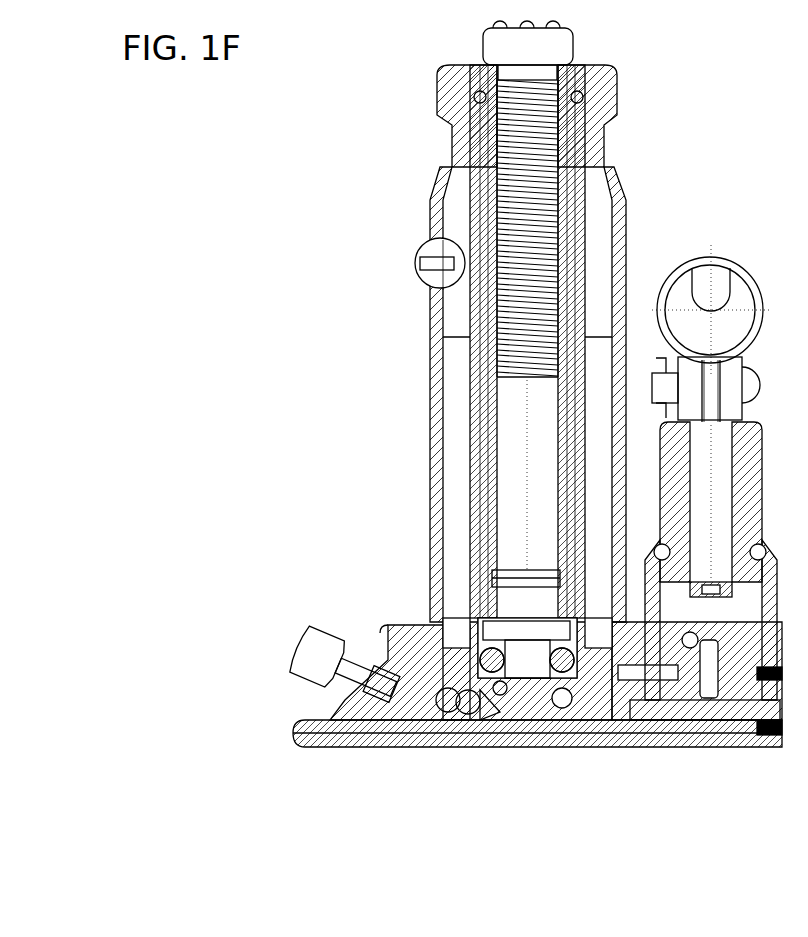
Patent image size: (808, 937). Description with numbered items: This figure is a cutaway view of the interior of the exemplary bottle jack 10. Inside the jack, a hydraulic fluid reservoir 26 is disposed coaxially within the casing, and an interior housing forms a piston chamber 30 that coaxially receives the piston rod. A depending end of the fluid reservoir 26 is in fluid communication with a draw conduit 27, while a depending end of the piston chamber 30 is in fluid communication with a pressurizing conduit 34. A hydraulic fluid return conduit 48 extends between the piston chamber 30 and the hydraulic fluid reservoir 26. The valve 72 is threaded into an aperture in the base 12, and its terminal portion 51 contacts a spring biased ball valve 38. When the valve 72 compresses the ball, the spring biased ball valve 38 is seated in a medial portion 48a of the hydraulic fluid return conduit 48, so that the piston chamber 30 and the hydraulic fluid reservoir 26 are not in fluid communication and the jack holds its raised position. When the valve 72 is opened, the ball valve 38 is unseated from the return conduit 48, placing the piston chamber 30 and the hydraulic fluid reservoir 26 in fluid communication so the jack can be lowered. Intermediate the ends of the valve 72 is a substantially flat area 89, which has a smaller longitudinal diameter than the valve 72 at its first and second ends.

The bottle jack 10 is at (298, 308).
The base 12 is at (387, 633).
The hydraulic fluid reservoir 26 is at (453, 500).
The draw conduit 27 is at (638, 673).
The piston chamber 30 is at (517, 548).
The pressurizing conduit 34 is at (672, 728).
The spring biased ball valve 38 is at (465, 700).
The hydraulic fluid return conduit 48 is at (450, 642).
The medial portion of the hydraulic fluid return conduit 48a is at (492, 713).
The terminal portion 51 is at (447, 700).
The valve 72 is at (358, 682).
The substantially flat area 89 is at (365, 686).